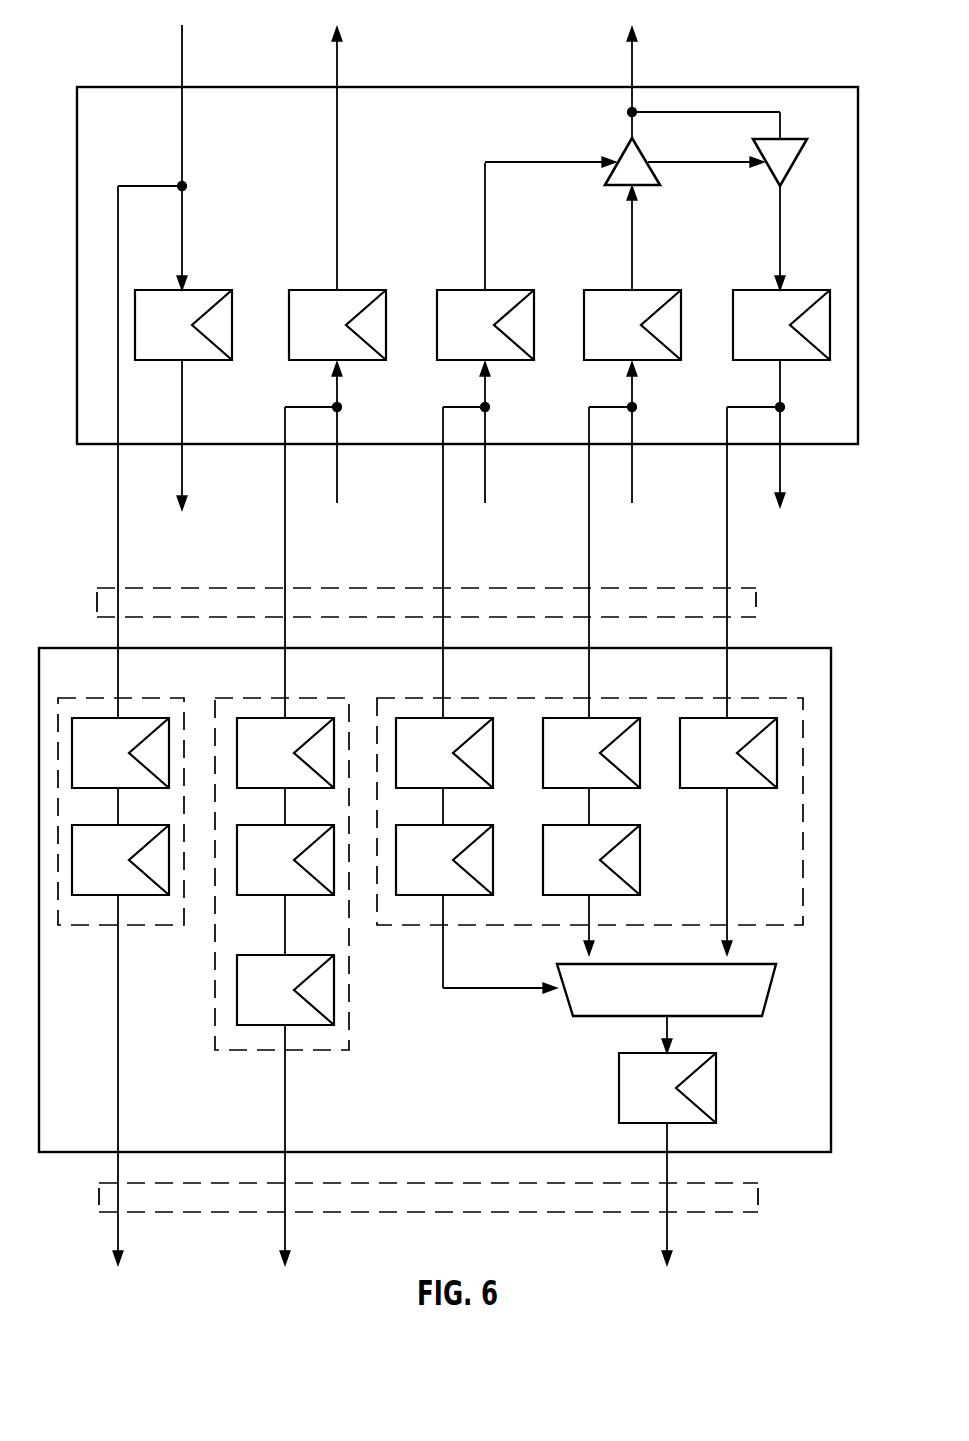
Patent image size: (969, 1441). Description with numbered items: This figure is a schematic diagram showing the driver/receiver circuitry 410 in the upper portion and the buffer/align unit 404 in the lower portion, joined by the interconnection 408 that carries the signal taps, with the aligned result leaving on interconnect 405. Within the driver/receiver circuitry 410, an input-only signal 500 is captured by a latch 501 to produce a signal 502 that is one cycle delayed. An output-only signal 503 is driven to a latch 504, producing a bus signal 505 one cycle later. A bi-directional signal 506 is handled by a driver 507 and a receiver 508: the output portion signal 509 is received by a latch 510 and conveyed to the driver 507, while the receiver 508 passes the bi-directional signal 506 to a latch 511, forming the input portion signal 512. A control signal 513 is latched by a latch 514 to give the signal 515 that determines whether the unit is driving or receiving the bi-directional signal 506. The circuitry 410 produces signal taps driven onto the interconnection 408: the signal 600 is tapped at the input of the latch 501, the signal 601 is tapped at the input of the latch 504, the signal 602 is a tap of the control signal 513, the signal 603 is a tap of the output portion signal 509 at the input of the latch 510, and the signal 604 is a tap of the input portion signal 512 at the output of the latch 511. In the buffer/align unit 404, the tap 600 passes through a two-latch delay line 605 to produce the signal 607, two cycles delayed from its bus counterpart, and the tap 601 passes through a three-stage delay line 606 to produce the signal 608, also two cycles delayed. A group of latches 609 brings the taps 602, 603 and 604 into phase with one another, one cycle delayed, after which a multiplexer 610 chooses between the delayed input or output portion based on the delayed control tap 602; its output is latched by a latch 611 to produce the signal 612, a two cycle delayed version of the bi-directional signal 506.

The driver/receiver circuitry 410 is at (785, 87).
The buffer/align unit 404 is at (800, 648).
The interconnection 408 is at (756, 600).
The interconnect 405 is at (758, 1197).
The input-only signal 500 is at (182, 65).
The latch 501 is at (208, 290).
The signal 502 is at (182, 462).
The output-only signal 503 is at (337, 462).
The latch 504 is at (365, 290).
The bus signal 505 is at (337, 65).
The bi-directional signal 506 is at (632, 63).
The driver 507 is at (620, 152).
The receiver 508 is at (795, 163).
The signal 509 is at (632, 462).
The latch 510 is at (600, 290).
The latch 511 is at (812, 290).
The signal 512 is at (780, 462).
The signal 513 is at (485, 462).
The latch 514 is at (520, 290).
The signal 515 is at (485, 190).
The signal 600 is at (118, 558).
The signal 601 is at (285, 556).
The signal 602 is at (443, 556).
The signal 603 is at (589, 556).
The signal 604 is at (727, 550).
The latch delay line 605 is at (146, 698).
The latch delay line 606 is at (312, 698).
The signal 607 is at (122, 1237).
The signal 608 is at (287, 1237).
The group of latches 609 is at (750, 698).
The multiplexer 610 is at (771, 993).
The latch 611 is at (715, 1083).
The signal 612 is at (668, 1237).